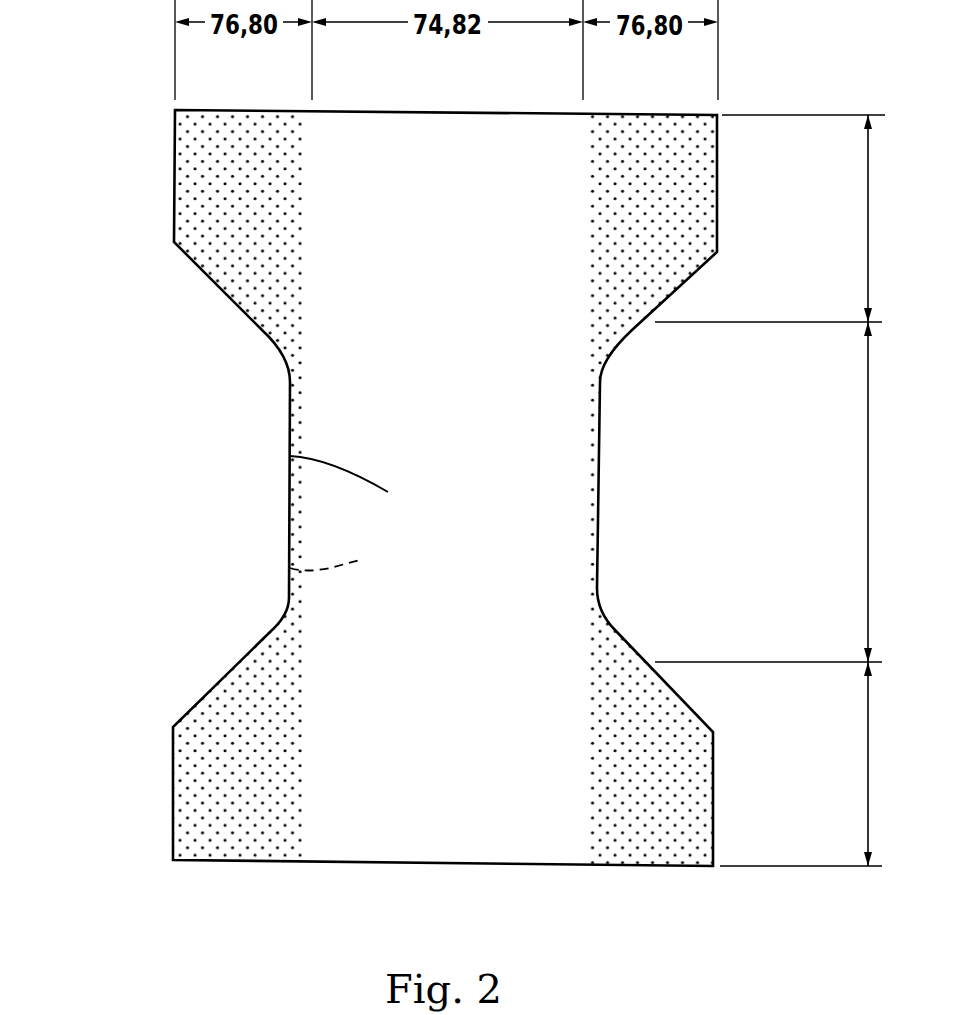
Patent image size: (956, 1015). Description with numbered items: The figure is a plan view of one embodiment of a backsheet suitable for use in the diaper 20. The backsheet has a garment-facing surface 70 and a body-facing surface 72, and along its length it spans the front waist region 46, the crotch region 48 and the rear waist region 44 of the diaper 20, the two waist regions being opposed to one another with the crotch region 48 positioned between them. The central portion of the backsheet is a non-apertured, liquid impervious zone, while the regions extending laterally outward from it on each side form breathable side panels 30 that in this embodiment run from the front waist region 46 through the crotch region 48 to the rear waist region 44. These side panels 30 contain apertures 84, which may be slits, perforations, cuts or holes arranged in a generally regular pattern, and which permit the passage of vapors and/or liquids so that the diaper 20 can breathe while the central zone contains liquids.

The diaper 20 is at (140, 95).
The breathable side panels 30 is at (250, 122).
The rear waist region 44 is at (868, 765).
The front waist region 46 is at (868, 220).
The crotch region 48 is at (868, 492).
The garment-facing surface 70 is at (290, 456).
The body-facing surface 72 is at (290, 568).
The apertures 84 is at (208, 815).